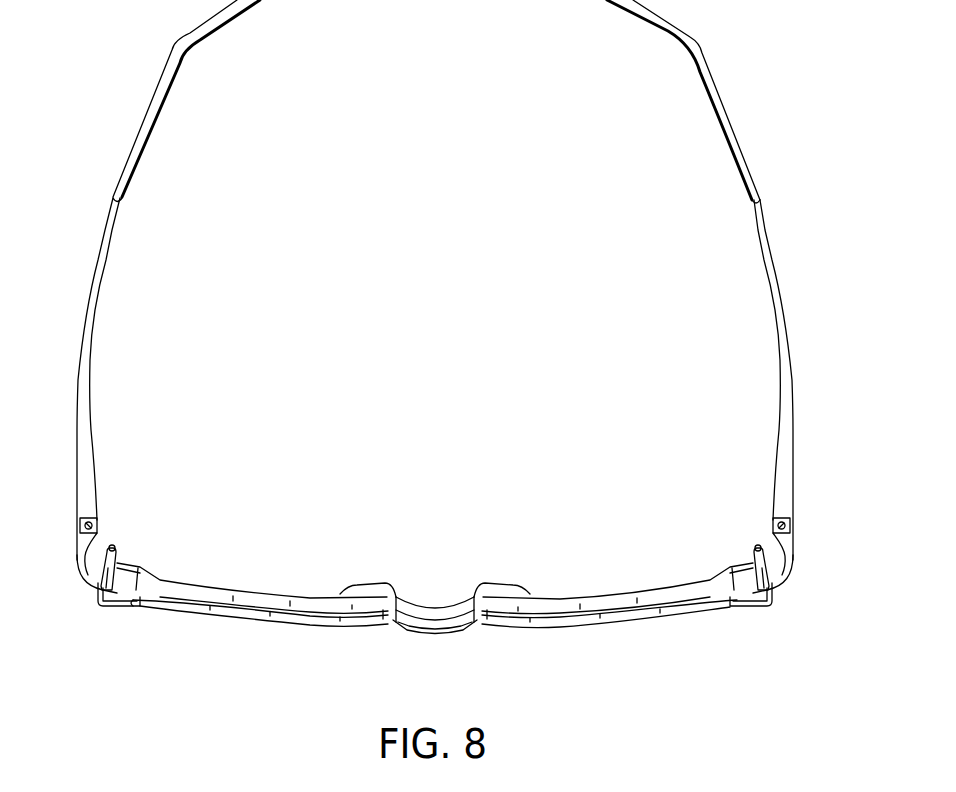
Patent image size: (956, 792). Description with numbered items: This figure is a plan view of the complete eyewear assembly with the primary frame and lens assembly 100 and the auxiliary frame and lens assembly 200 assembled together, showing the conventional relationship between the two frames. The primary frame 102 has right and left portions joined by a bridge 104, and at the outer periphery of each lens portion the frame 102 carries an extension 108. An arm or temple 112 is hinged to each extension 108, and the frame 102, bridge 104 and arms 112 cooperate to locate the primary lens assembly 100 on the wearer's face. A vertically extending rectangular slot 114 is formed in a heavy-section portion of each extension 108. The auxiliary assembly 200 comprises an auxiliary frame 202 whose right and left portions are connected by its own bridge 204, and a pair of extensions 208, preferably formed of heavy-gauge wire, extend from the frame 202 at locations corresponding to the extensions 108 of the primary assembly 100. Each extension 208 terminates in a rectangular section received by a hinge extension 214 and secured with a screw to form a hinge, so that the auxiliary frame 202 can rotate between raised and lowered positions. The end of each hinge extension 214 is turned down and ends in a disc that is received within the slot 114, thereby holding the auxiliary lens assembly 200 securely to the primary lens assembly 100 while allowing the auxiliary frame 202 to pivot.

The primary frame and lens assembly 100 is at (232, 503).
The primary frame 102 is at (262, 602).
The bridge 104 is at (441, 609).
The extension 108 is at (82, 575).
The arm or temple 112 is at (90, 294).
The rectangular slot 114 is at (97, 559).
The auxiliary frame and lens assembly 200 is at (142, 651).
The auxiliary frame 202 is at (298, 622).
The bridge 204 is at (418, 632).
The extension 208 is at (110, 600).
The hinge extension 214 is at (118, 553).